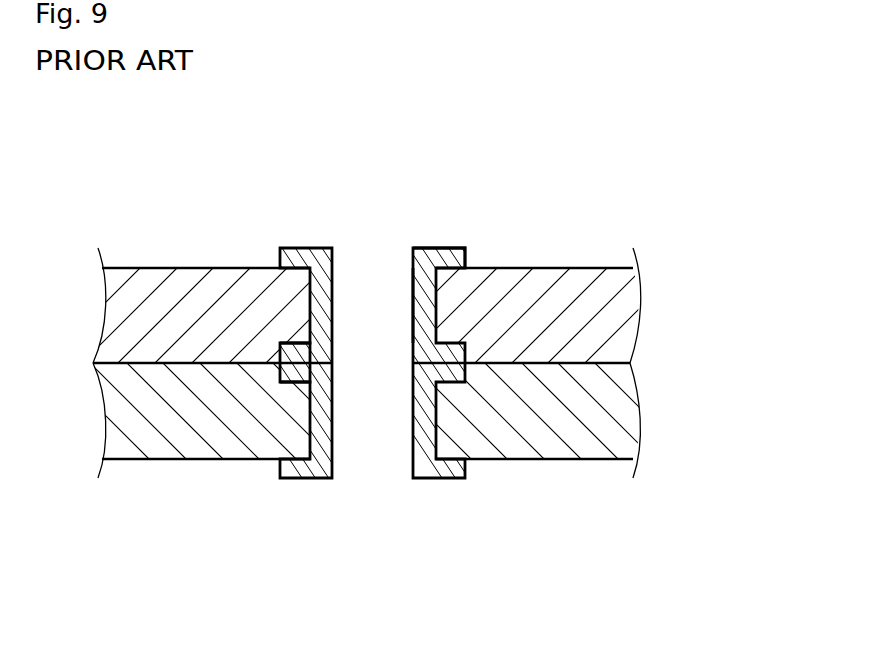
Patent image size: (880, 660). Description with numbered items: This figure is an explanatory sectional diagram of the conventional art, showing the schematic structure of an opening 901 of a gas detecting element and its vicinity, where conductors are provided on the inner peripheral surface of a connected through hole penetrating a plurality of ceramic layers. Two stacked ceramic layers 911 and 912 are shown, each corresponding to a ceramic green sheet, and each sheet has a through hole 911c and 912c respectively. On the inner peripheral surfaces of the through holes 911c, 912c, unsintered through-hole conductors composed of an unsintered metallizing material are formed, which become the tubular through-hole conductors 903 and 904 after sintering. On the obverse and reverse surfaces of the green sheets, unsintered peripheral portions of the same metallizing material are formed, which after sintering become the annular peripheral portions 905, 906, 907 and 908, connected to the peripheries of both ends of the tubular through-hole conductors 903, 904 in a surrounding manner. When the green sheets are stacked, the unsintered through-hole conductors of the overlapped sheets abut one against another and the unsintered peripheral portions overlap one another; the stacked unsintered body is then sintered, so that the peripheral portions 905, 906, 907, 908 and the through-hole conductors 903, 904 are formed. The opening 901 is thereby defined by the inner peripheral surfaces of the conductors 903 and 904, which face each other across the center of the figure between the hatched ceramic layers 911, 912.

The opening 901 is at (349, 274).
The tubular through-hole conductor 903 is at (434, 361).
The tubular through-hole conductor 904 is at (423, 308).
The annular peripheral portion 905 is at (280, 361).
The annular peripheral portion 906 is at (281, 376).
The annular peripheral portion 907 is at (448, 345).
The annular peripheral portion 908 is at (447, 256).
The ceramic layer 911 is at (413, 494).
The through hole 911c is at (333, 410).
The ceramic layer 912 is at (409, 274).
The through hole 912c is at (329, 304).